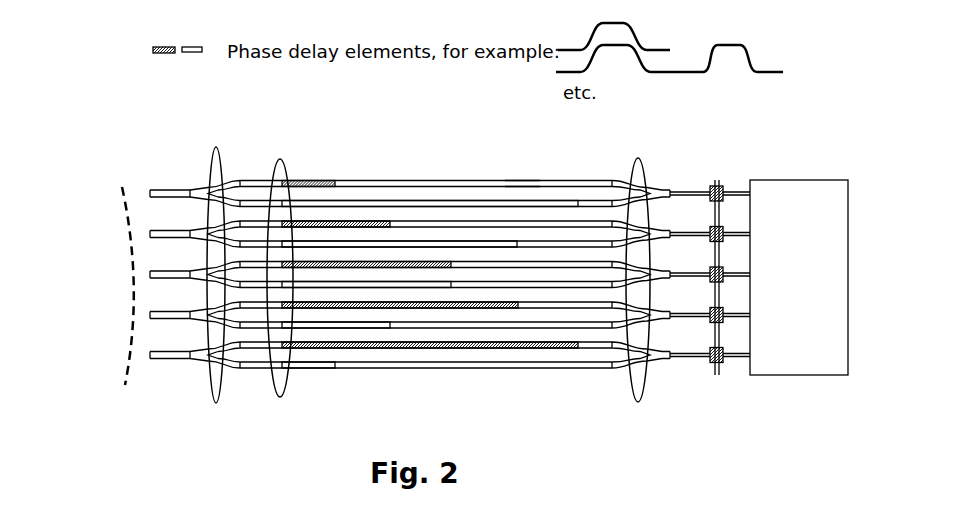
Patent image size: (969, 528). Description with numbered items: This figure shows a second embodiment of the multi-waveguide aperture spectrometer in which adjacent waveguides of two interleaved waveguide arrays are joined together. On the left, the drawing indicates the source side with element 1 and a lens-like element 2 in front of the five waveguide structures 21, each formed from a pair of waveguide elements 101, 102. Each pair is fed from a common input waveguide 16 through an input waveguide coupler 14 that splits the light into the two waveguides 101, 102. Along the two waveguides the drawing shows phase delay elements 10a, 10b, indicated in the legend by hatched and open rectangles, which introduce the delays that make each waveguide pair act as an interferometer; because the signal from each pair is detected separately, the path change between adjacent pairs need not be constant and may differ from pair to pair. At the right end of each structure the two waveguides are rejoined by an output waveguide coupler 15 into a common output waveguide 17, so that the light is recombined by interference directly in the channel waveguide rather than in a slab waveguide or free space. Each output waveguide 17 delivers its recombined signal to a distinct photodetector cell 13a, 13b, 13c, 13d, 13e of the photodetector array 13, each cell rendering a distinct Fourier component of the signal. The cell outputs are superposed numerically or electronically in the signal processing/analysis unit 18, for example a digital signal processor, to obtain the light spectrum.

The object / scene under observation 1 is at (132, 252).
The lens (imaging optics) 2 is at (213, 393).
The waveguide coupler 14 is at (227, 160).
The common input waveguide 16 is at (168, 166).
The waveguide 101 is at (426, 143).
The waveguide 102 is at (426, 147).
The first phase delay element 10a is at (333, 162).
The second phase delay element 10b is at (430, 171).
The waveguide structure 21 is at (543, 156).
The waveguide coupler 15 is at (645, 160).
The common output waveguide 17 is at (692, 161).
The photodetector array 13 is at (730, 271).
The photodetector cell 13a is at (717, 186).
The photodetector cell 13b is at (716, 226).
The photodetector cell 13c is at (713, 270).
The photodetector cell 13d is at (710, 352).
The photodetector cell 13e is at (717, 368).
The signal processing/analysis unit 18 is at (799, 277).